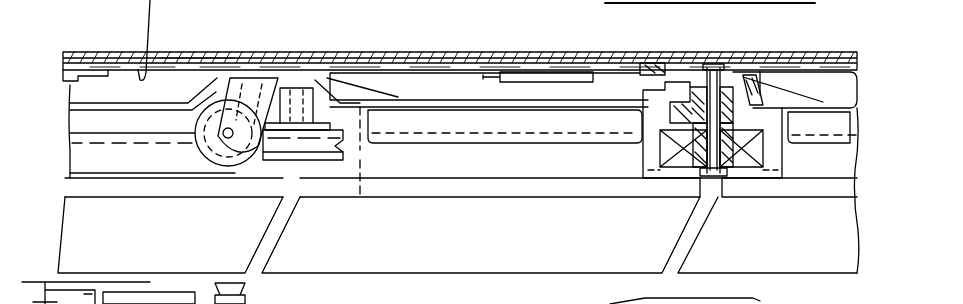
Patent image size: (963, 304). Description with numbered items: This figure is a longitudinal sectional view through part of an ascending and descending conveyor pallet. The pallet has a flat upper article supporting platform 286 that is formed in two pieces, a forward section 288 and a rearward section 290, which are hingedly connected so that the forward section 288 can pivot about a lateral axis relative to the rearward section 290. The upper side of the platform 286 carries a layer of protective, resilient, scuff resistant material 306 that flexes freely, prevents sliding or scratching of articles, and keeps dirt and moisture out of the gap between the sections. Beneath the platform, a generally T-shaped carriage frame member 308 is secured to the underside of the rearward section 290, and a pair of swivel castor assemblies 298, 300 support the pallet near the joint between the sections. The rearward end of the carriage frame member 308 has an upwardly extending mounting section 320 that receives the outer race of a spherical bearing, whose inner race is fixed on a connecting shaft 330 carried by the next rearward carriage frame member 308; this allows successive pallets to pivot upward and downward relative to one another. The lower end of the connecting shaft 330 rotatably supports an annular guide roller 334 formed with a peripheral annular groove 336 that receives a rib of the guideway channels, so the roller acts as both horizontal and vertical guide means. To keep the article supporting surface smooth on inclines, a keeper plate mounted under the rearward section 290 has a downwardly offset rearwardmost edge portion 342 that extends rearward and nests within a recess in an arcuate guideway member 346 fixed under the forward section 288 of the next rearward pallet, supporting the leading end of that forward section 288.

The swivel castor assembly 300 is at (110, 103).
The protective resilient material 306 is at (258, 0).
The forward section 288 is at (362, 52).
The upper article supporting platform 286 is at (540, 300).
The rearwardmost edge portion 342 is at (660, 56).
The mounting section 320 is at (750, 90).
The rearward section 290 is at (830, 52).
The guideway member 346 is at (605, 85).
The annular groove 336 is at (335, 150).
The guide roller 334 is at (326, 158).
The carriage frame member 308 is at (503, 152).
The connecting shaft 330 is at (703, 147).
The swivel castor assembly 298 is at (187, 152).